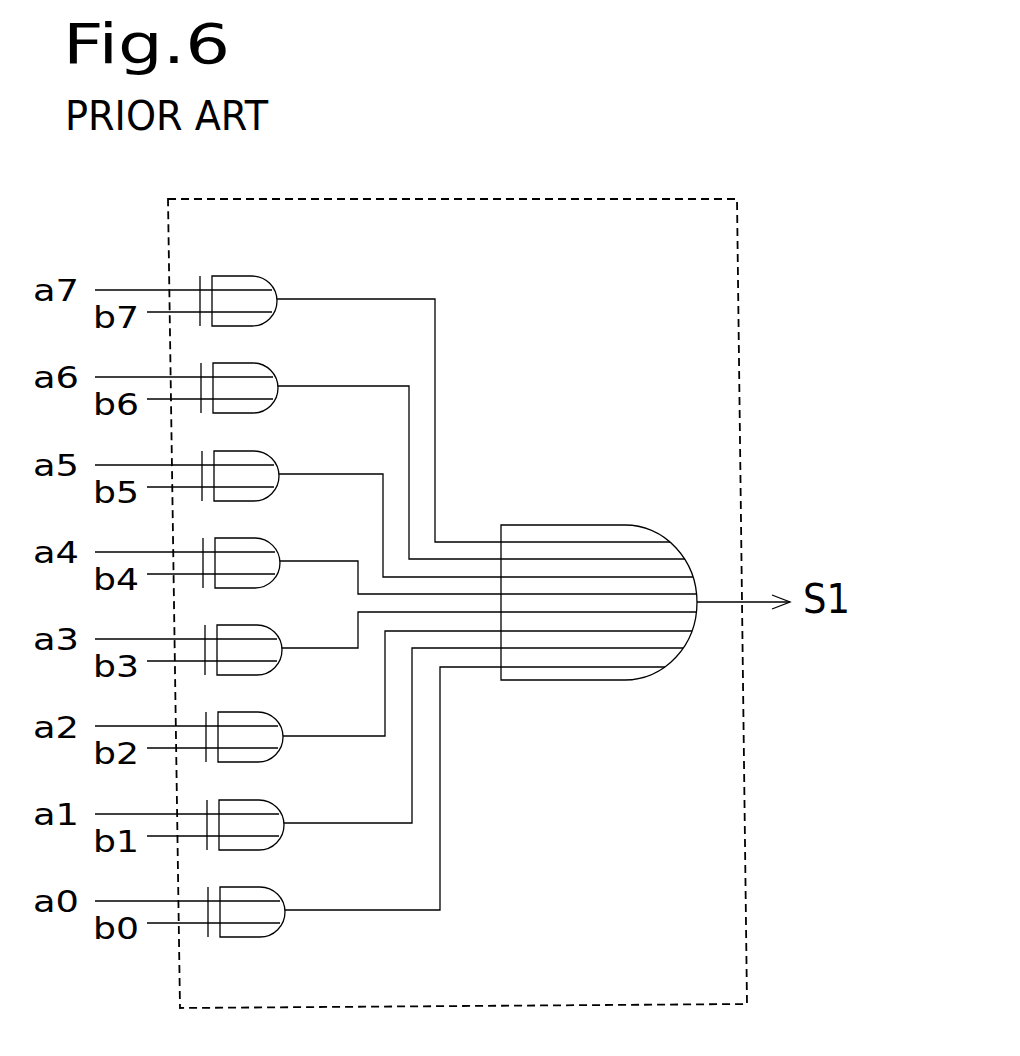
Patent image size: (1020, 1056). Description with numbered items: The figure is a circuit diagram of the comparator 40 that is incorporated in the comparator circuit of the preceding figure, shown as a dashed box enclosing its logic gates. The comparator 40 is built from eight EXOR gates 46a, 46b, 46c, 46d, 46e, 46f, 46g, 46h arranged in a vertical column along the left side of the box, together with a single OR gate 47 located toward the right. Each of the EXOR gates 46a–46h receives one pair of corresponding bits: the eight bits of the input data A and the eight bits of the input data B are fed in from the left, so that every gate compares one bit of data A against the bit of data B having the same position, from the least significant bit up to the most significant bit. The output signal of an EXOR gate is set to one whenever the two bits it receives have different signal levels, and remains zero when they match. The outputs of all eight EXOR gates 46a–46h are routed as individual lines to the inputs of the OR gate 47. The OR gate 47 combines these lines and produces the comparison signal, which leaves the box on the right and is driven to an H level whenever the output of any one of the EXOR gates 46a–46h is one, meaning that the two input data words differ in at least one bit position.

The comparator 40 is at (628, 195).
The EXOR gate 46a is at (257, 273).
The EXOR gate 46b is at (258, 360).
The EXOR gate 46c is at (259, 448).
The EXOR gate 46d is at (260, 535).
The EXOR gate 46e is at (237, 622).
The EXOR gate 46f is at (263, 710).
The EXOR gate 46g is at (264, 797).
The EXOR gate 46h is at (265, 884).
The OR gate 47 is at (617, 523).